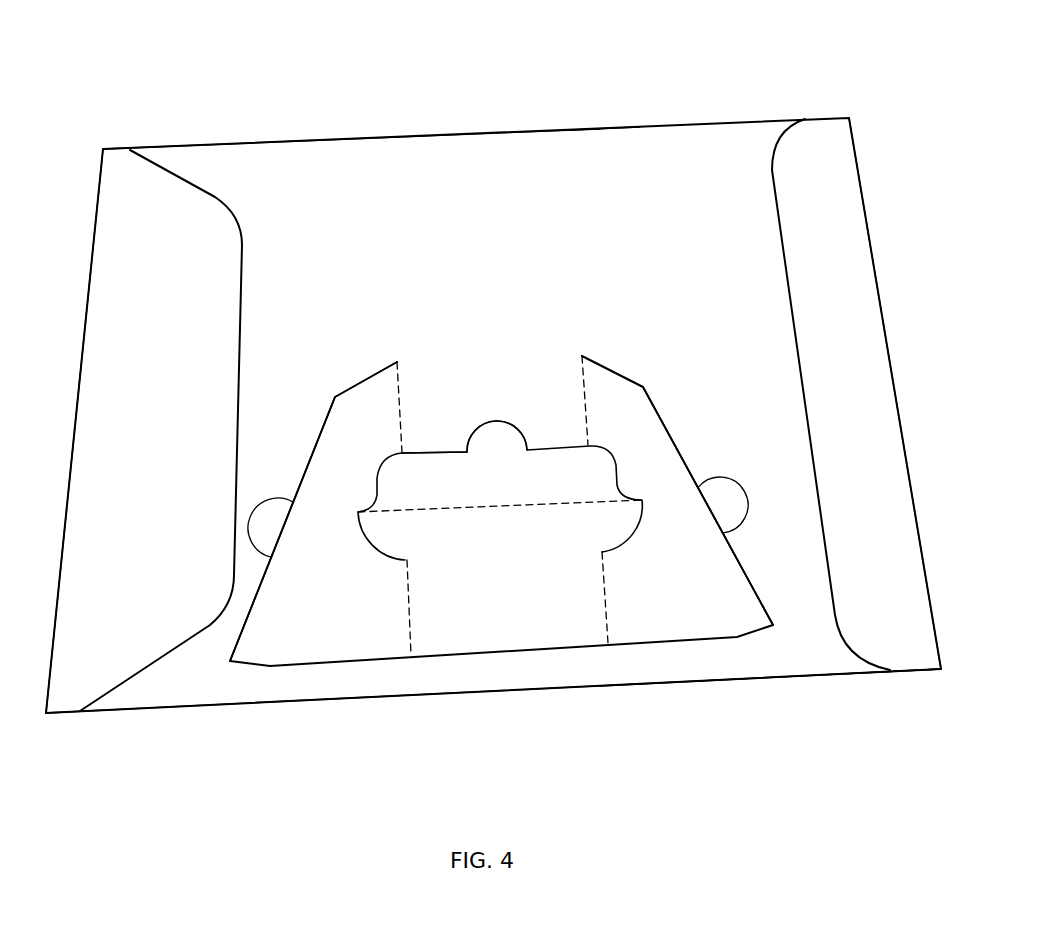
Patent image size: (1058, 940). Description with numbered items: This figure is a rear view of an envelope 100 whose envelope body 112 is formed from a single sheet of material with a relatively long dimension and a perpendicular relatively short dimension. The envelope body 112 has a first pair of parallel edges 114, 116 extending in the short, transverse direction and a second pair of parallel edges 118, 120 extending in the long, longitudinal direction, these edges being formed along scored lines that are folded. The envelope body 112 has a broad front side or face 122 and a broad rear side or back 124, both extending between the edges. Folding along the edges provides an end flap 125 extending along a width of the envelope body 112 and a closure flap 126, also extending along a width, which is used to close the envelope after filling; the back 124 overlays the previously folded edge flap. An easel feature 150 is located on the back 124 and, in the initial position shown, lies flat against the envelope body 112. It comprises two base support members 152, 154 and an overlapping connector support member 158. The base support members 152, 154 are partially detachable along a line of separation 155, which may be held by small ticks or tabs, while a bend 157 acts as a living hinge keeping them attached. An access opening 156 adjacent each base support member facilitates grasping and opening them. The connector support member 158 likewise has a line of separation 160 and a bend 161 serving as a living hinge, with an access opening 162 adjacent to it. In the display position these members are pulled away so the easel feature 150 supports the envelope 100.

The envelope 100 is at (671, 147).
The envelope body 112 is at (513, 146).
The parallel edge 114 is at (916, 490).
The parallel edge 116 is at (80, 358).
The parallel edge 118 is at (308, 704).
The parallel edge 120 is at (272, 143).
The face 122 is at (752, 690).
The back 124 is at (587, 158).
The end flap 125 is at (850, 173).
The closure flap 126 is at (238, 284).
The easel feature 150 is at (473, 350).
The base support member 152 is at (356, 413).
The base support member 154 is at (648, 428).
The line of separation 155 is at (322, 428).
The access opening 156 is at (278, 499).
The bend 157 is at (402, 390).
The connector support member 158 is at (502, 532).
The line of separation 160 is at (442, 452).
The bend 161 is at (443, 507).
The access opening 162 is at (498, 432).